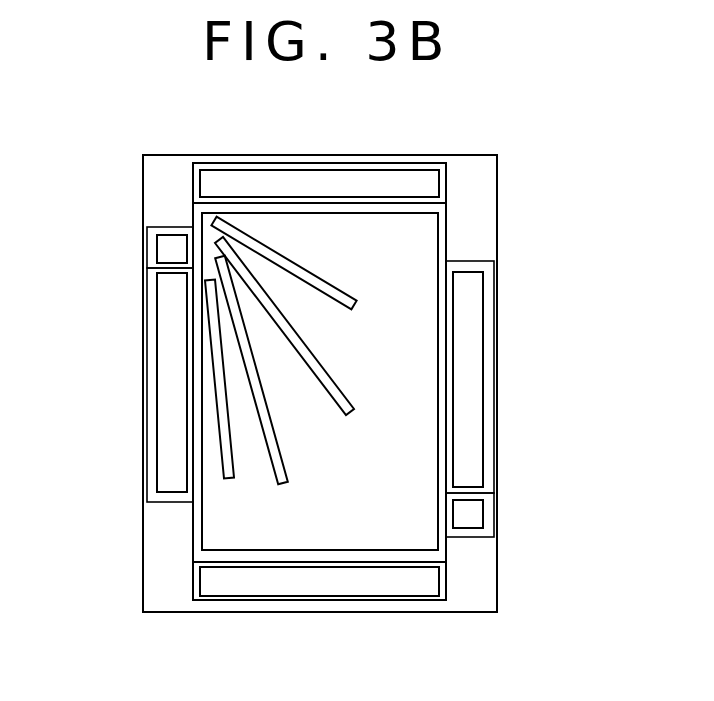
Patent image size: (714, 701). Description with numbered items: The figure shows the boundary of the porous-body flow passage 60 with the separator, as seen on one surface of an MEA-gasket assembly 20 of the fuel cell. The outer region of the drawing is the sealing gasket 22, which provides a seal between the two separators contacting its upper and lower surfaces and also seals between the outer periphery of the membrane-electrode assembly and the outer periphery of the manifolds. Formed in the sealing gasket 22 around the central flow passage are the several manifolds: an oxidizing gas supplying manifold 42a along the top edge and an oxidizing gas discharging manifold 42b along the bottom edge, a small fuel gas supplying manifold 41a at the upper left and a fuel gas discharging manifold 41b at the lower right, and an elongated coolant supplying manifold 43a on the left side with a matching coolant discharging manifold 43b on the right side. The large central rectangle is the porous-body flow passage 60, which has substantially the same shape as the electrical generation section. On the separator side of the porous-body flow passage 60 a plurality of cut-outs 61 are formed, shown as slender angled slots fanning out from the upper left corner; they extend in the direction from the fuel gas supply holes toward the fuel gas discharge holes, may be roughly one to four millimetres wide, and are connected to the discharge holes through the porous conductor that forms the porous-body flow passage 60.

The MEA-gasket assembly 20 is at (176, 155).
The sealing gasket 22 is at (480, 180).
The oxidizing gas supplying manifold 42a is at (313, 175).
The oxidizing gas discharging manifold 42b is at (360, 582).
The porous-body flow passage 60 is at (438, 221).
The cut-outs 61 is at (355, 296).
The fuel gas supplying manifold 41a is at (172, 247).
The fuel gas discharging manifold 41b is at (468, 517).
The coolant supplying manifold 43a is at (172, 358).
The coolant discharging manifold 43b is at (470, 375).